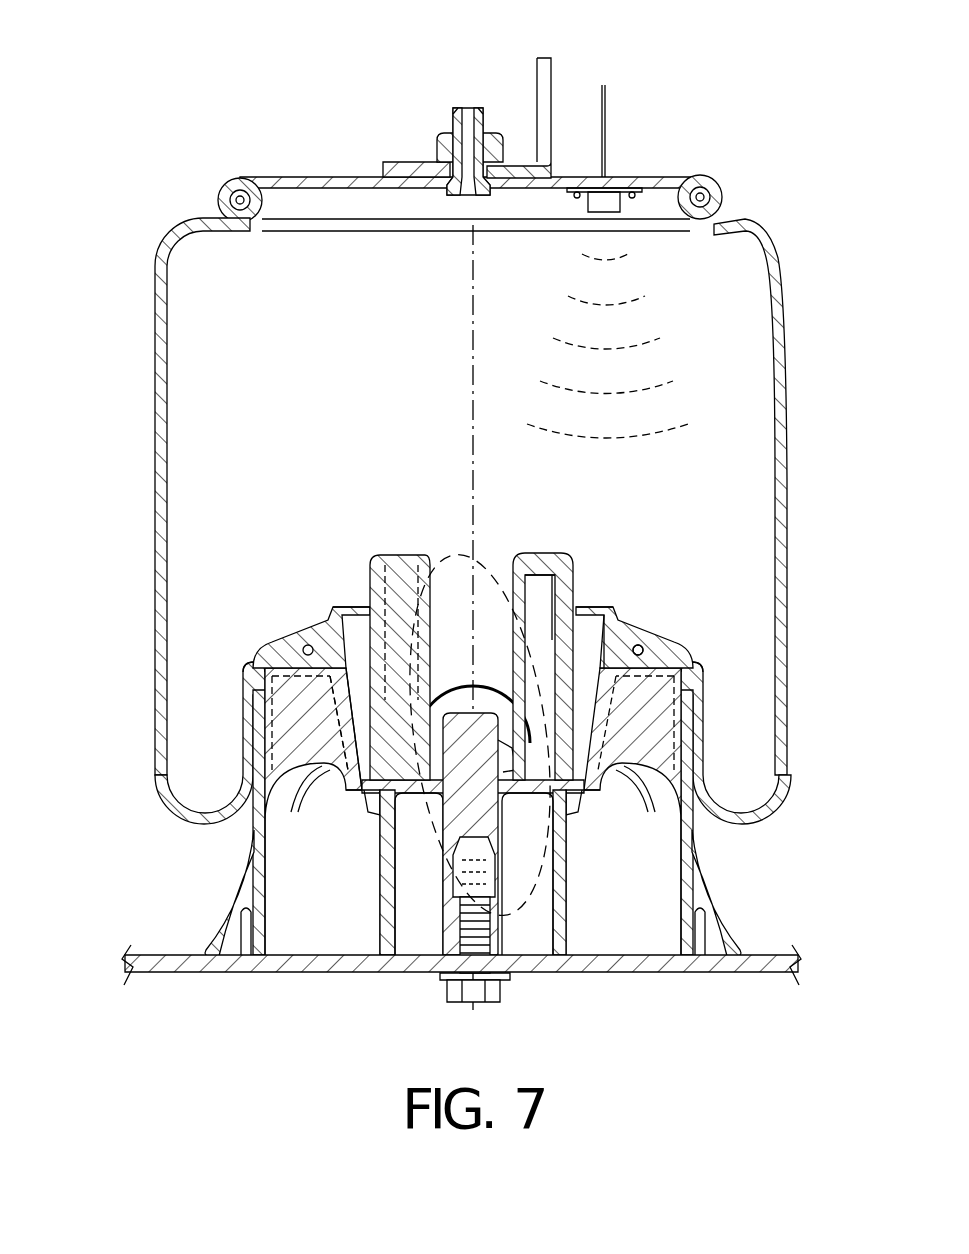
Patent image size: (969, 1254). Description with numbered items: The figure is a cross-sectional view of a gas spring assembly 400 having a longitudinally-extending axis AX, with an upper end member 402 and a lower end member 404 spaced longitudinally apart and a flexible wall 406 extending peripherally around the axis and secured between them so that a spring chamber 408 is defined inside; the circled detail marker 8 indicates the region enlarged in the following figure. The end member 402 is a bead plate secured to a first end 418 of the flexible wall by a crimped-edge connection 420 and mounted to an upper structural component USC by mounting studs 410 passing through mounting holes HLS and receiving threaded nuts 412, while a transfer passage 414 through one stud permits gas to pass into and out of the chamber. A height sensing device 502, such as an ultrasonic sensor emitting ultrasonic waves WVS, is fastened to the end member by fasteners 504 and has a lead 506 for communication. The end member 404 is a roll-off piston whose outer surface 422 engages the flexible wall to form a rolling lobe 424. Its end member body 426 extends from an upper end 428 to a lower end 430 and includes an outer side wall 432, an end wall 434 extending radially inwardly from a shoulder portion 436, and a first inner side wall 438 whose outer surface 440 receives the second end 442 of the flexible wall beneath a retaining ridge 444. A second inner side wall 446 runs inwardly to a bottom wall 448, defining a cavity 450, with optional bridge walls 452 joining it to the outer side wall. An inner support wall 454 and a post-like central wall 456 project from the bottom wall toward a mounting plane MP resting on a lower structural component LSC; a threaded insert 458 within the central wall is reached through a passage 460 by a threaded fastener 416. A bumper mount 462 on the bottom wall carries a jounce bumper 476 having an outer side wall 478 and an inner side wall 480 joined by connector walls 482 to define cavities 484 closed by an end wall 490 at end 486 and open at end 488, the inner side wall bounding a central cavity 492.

The gas spring assembly 400 is at (790, 192).
The end member 402 is at (285, 172).
The end member 404 is at (738, 885).
The flexible wall 406 is at (792, 438).
The spring chamber 408 is at (195, 403).
The mounting studs 410 is at (454, 122).
The threaded nuts 412 is at (438, 140).
The transfer passage 414 is at (472, 102).
The threaded fastener 416 is at (470, 1000).
The first end 418 is at (262, 252).
The crimped-edge connection 420 is at (716, 182).
The outer surface 422 is at (250, 860).
The rolling lobe 424 is at (195, 820).
The end member body 426 is at (700, 847).
The upper end 428 is at (700, 633).
The lower end 430 is at (742, 925).
The outer side wall 432 is at (250, 882).
The end wall 434 is at (300, 662).
The shoulder portion 436 is at (258, 680).
The first inner side wall 438 is at (352, 622).
The outer surface 440 is at (626, 652).
The second end 442 is at (714, 588).
The retaining ridge 444 is at (612, 635).
The second inner side wall 446 is at (345, 755).
The bottom wall 448 is at (420, 792).
The cavity 450 is at (590, 618).
The bridge walls 452 is at (290, 722).
The inner support wall 454 is at (570, 940).
The central wall 456 is at (415, 800).
The threaded insert 458 is at (495, 880).
The passage 460 is at (445, 992).
The bumper mount 462 is at (350, 792).
The jounce bumper 476 is at (390, 548).
The outer side wall 478 is at (560, 740).
The inner side wall 480 is at (538, 657).
The connector walls 482 is at (382, 582).
The cavities 484 is at (690, 643).
The end 486 is at (525, 550).
The end 488 is at (362, 762).
The end wall 490 is at (548, 558).
The central cavity 492 is at (481, 588).
The height sensing device 502 is at (578, 200).
The fasteners 504 is at (633, 192).
The lead 506 is at (608, 93).
The longitudinally-extending axis AX is at (468, 380).
The mounting holes HLS is at (440, 190).
The upper structural component USC is at (553, 105).
The ultrasonic waves WVS is at (675, 308).
The mounting plane MP is at (290, 968).
The lower structural component LSC is at (200, 979).
The detail region of FIG. 8 is at (446, 548).